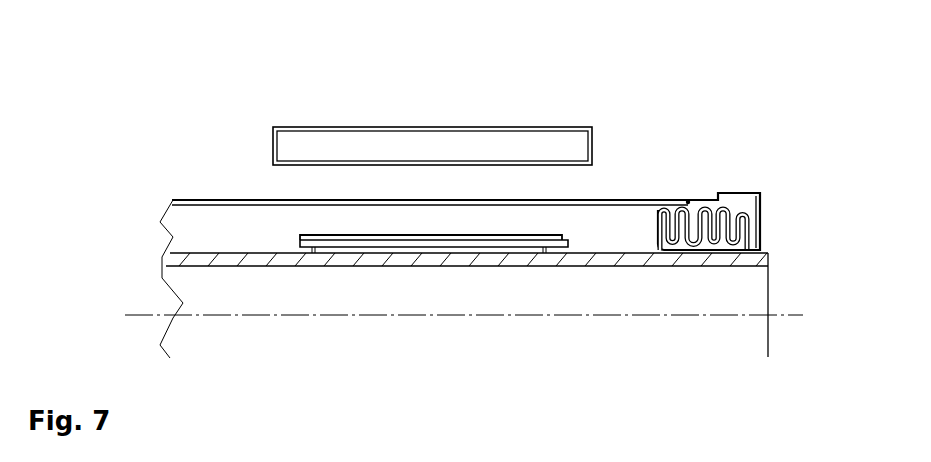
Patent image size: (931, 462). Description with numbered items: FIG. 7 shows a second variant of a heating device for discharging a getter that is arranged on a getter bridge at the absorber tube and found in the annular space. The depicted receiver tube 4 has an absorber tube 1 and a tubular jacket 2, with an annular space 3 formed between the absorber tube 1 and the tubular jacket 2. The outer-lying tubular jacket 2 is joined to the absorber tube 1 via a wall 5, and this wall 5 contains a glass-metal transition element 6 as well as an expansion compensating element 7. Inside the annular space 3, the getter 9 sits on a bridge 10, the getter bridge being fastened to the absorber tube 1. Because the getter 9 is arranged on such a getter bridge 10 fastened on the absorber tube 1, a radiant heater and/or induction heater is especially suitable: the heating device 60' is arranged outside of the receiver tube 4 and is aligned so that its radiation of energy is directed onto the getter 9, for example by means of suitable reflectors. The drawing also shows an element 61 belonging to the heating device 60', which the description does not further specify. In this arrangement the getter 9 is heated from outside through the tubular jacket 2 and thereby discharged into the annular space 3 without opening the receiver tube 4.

The absorber tube 1 is at (177, 260).
The tubular jacket 2 is at (172, 200).
The annular space 3 is at (188, 236).
The receiver tube 4 is at (133, 302).
The wall 5 is at (763, 244).
The glass-metal transition element 6 is at (710, 200).
The expansion compensating element 7 is at (723, 228).
The getter 9 is at (303, 236).
The getter bridge 10 is at (297, 247).
The heating device 60' is at (432, 95).
The inner plate 61 is at (487, 128).